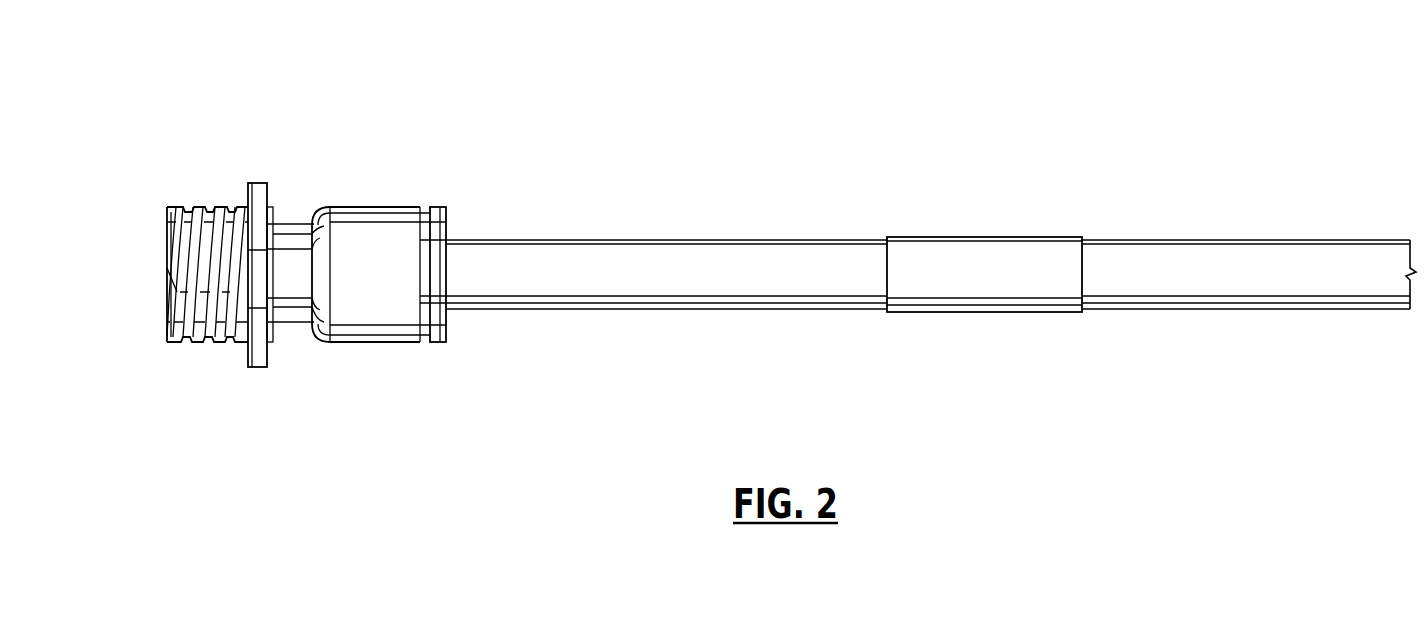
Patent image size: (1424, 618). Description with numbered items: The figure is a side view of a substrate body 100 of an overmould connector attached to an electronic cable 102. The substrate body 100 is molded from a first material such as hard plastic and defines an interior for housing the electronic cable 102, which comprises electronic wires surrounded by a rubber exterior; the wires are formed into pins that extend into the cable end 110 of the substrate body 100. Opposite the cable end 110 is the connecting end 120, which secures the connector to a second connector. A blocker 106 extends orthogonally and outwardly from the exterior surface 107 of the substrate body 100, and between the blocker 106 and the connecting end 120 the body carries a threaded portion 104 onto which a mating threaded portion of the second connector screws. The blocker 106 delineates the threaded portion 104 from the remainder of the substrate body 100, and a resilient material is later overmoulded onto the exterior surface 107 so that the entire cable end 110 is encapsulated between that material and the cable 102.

The substrate body 100 is at (382, 140).
The electronic cable 102 is at (710, 238).
The threaded portion 104 is at (208, 348).
The blocker 106 is at (260, 182).
The exterior surface 107 is at (385, 345).
The cable end 110 is at (448, 322).
The connecting end 120 is at (163, 249).